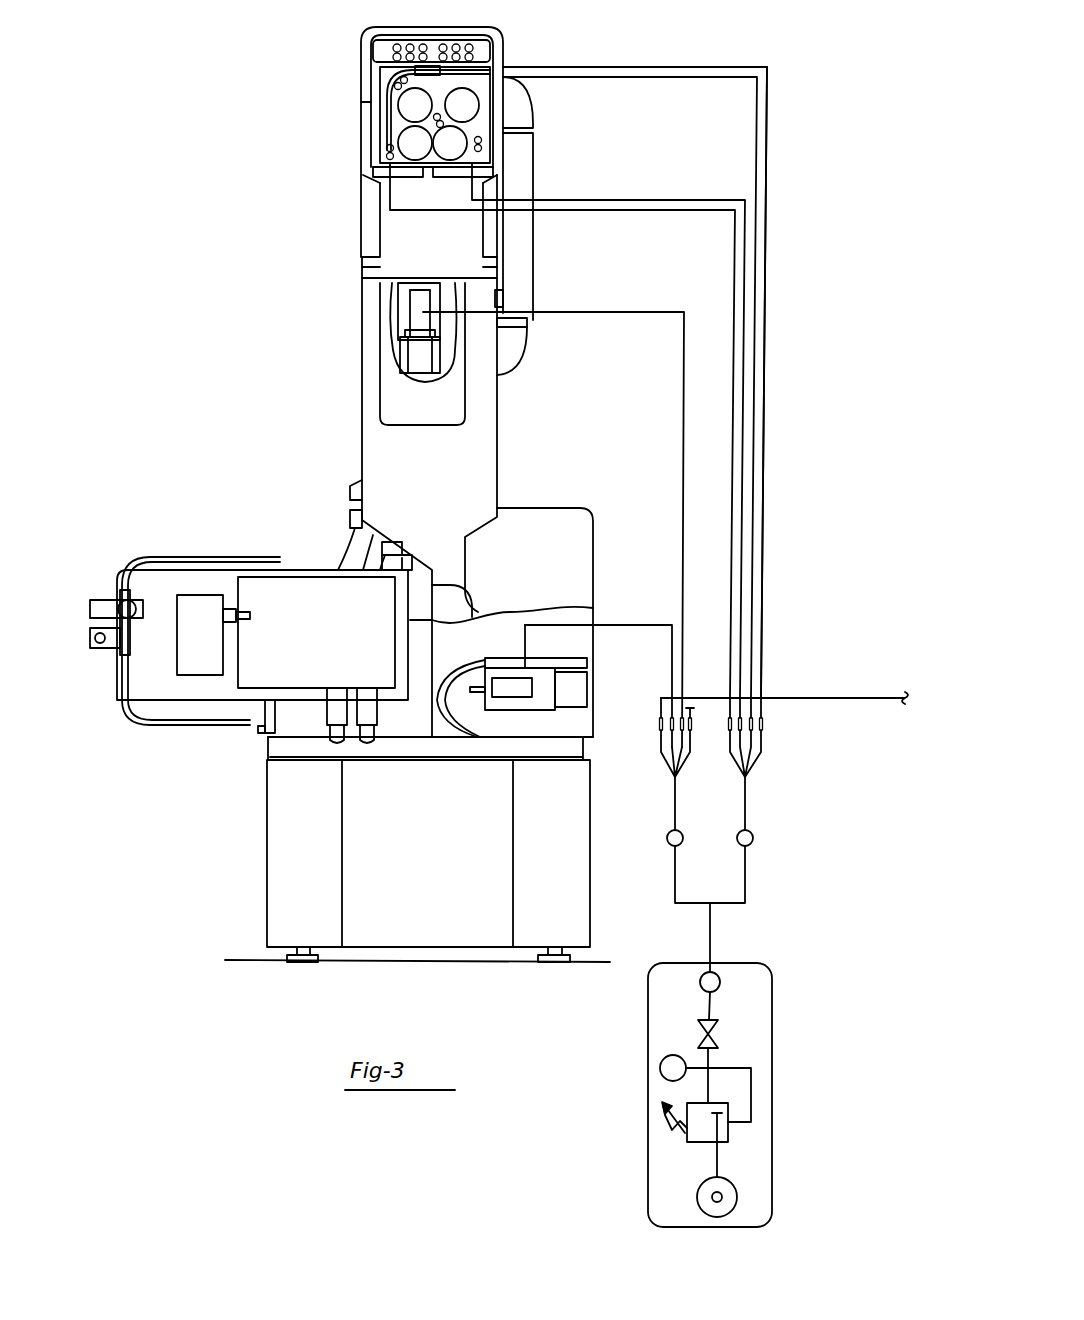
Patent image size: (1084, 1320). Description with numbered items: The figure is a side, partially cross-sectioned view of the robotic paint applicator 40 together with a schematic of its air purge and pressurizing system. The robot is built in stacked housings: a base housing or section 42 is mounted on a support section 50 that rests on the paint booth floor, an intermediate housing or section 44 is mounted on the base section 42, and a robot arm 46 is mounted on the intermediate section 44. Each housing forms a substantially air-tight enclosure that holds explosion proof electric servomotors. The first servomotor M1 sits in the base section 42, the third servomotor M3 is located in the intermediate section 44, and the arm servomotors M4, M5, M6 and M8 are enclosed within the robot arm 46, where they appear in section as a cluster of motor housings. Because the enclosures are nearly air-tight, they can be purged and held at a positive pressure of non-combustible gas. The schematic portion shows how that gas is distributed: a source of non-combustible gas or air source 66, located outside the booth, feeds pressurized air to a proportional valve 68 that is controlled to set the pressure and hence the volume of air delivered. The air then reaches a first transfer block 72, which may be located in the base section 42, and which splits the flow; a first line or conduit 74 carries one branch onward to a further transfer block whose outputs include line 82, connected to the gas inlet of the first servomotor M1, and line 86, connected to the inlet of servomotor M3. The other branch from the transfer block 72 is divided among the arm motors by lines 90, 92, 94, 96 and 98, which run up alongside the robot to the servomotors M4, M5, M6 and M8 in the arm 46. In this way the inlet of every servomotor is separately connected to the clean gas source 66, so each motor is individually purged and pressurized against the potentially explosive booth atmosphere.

The robotic paint applicator 40 is at (280, 363).
The base housing or section 42 is at (203, 746).
The intermediate housing or section 44 is at (498, 420).
The robot arm 46 is at (361, 130).
The support section 50 is at (234, 888).
The source of non-combustible gas or air source 66 is at (718, 1196).
The proportional valve 68 is at (708, 1034).
The first transfer block 72 is at (707, 903).
The first line or conduit 74 is at (712, 938).
The line 82 is at (598, 625).
The line 86 is at (683, 440).
The line 90 is at (700, 78).
The line 92 is at (668, 211).
The line 94 is at (643, 200).
The line 96 is at (668, 67).
The line 98 is at (635, 382).
The explosion proof electric servomotor M1 is at (580, 692).
The explosion proof electric servomotor M3 is at (422, 303).
The explosion proof electric servomotor M4 is at (470, 105).
The explosion proof electric servomotor M5 is at (407, 137).
The explosion proof electric servomotor M6 is at (472, 135).
The explosion proof electric servomotor M8 is at (410, 103).